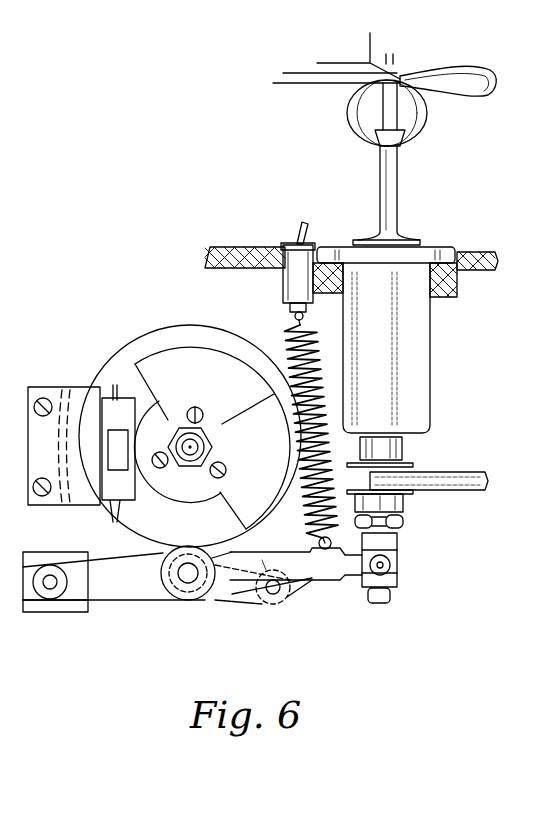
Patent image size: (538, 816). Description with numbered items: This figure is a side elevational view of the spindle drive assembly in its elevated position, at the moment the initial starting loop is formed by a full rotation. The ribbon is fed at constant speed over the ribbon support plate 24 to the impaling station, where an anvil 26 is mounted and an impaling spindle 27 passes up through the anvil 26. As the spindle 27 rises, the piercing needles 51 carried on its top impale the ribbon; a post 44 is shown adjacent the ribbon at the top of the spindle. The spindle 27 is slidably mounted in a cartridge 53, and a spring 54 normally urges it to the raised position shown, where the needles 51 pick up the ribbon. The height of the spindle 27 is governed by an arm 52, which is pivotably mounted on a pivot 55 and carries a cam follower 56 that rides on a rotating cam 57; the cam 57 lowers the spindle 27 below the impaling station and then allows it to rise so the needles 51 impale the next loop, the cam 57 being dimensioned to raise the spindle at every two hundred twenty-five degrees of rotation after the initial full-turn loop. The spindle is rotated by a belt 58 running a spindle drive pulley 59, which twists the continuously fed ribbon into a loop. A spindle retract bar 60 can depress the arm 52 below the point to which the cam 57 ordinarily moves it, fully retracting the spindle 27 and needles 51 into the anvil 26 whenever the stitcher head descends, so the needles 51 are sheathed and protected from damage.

The ribbon support plate 24 is at (310, 85).
The anvil 26 is at (398, 176).
The impaling spindle 27 is at (397, 108).
The post 44 is at (373, 38).
The piercing needles 51 is at (395, 62).
The arm 52 is at (303, 582).
The cartridge 53 is at (431, 348).
The spring 54 is at (287, 330).
The pivot 55 is at (50, 612).
The cam follower 56 is at (185, 600).
The cam 57 is at (152, 340).
The belt 58 is at (430, 470).
The spindle drive pulley 59 is at (405, 495).
The spindle retract bar 60 is at (403, 532).